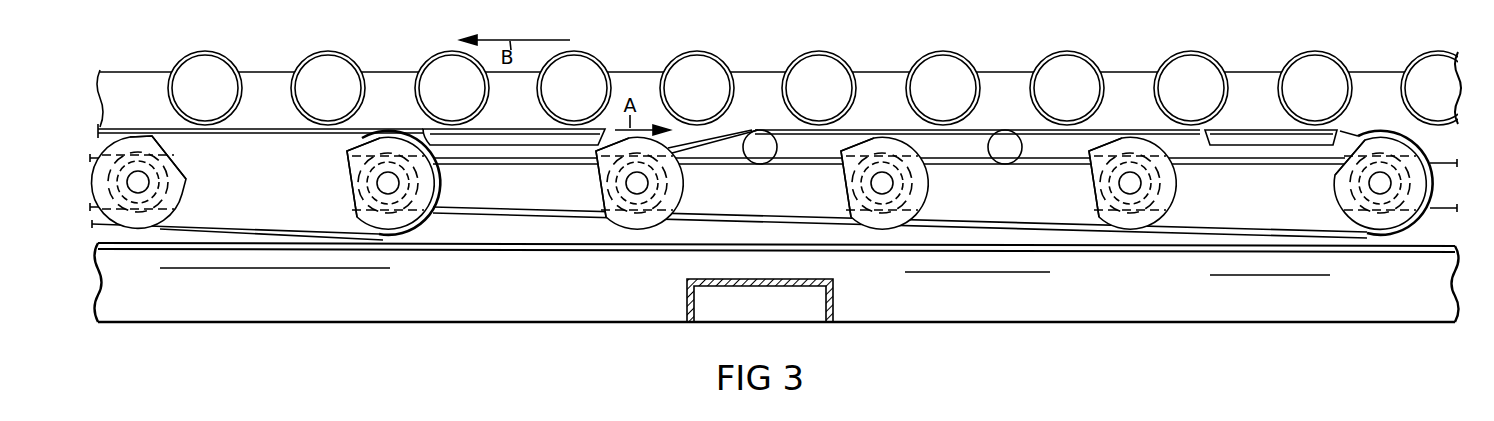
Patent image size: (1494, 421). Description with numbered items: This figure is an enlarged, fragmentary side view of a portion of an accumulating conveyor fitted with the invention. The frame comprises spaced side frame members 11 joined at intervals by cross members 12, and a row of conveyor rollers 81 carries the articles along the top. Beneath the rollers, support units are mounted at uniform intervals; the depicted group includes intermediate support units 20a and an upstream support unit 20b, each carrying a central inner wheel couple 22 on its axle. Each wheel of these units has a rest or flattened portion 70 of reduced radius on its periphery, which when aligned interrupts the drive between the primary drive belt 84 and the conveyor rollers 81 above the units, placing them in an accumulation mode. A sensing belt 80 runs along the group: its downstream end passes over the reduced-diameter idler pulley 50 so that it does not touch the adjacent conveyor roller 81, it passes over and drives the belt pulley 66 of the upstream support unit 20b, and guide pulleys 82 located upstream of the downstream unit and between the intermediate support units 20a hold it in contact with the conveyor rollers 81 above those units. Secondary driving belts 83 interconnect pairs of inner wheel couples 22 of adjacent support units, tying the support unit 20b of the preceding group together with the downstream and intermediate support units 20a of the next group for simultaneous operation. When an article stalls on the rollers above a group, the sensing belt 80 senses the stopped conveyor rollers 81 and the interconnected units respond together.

The side frame member 11 is at (1112, 307).
The cross member 12 is at (775, 285).
The intermediate support unit 20a is at (177, 198).
The upstream support unit 20b is at (372, 211).
The inner wheel couple 22 is at (360, 173).
The idler pulley 50 is at (650, 183).
The belt pulley 66 is at (357, 150).
The rest or flattened portion 70 is at (170, 158).
The sensing belt 80 is at (868, 130).
The conveyor roller 81 is at (848, 69).
The guide pulley 82 is at (761, 130).
The secondary driving belt 83 is at (472, 208).
The primary drive belt 84 is at (510, 128).